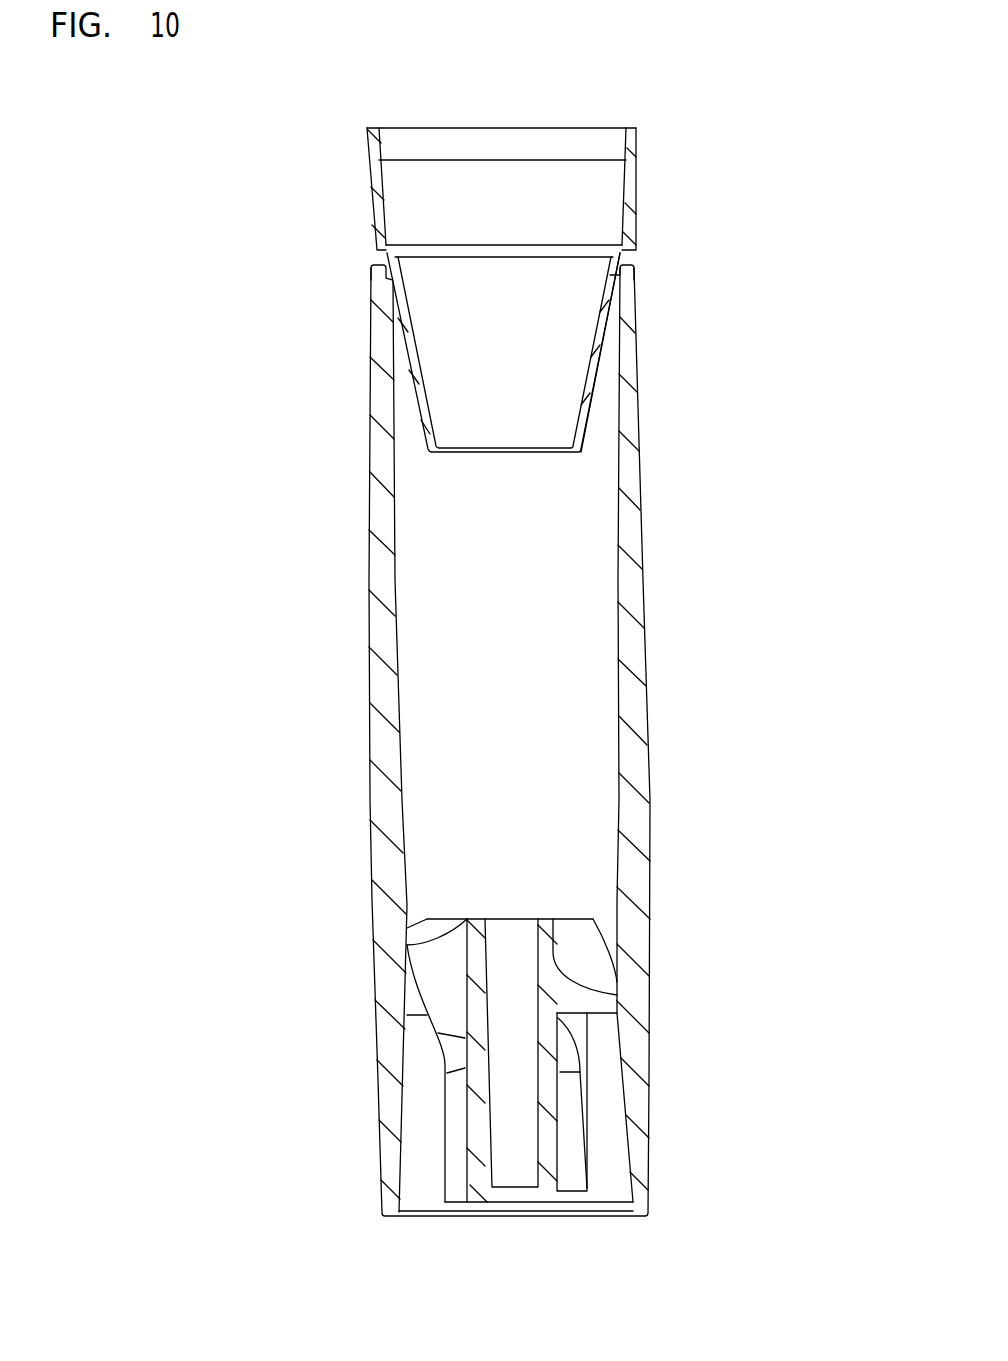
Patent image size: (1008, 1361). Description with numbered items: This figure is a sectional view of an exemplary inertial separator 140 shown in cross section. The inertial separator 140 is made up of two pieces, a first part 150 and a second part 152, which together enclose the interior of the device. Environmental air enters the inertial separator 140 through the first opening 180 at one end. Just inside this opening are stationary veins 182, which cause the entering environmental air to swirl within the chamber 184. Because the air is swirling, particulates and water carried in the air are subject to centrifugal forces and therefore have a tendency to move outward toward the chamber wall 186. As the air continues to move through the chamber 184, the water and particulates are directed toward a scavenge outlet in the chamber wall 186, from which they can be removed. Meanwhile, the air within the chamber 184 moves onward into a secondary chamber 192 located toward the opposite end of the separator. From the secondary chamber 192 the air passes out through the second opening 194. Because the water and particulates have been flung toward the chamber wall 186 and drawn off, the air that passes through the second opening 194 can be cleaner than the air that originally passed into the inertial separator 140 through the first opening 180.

The inertial separator 140 is at (782, 205).
The second opening 194 is at (500, 140).
The secondary chamber 192 is at (430, 332).
The first part 150 is at (588, 375).
The chamber wall 186 is at (383, 630).
The second part 152 is at (637, 765).
The chamber 184 is at (415, 803).
The stationary veins 182 is at (457, 1160).
The first opening 180 is at (533, 1213).